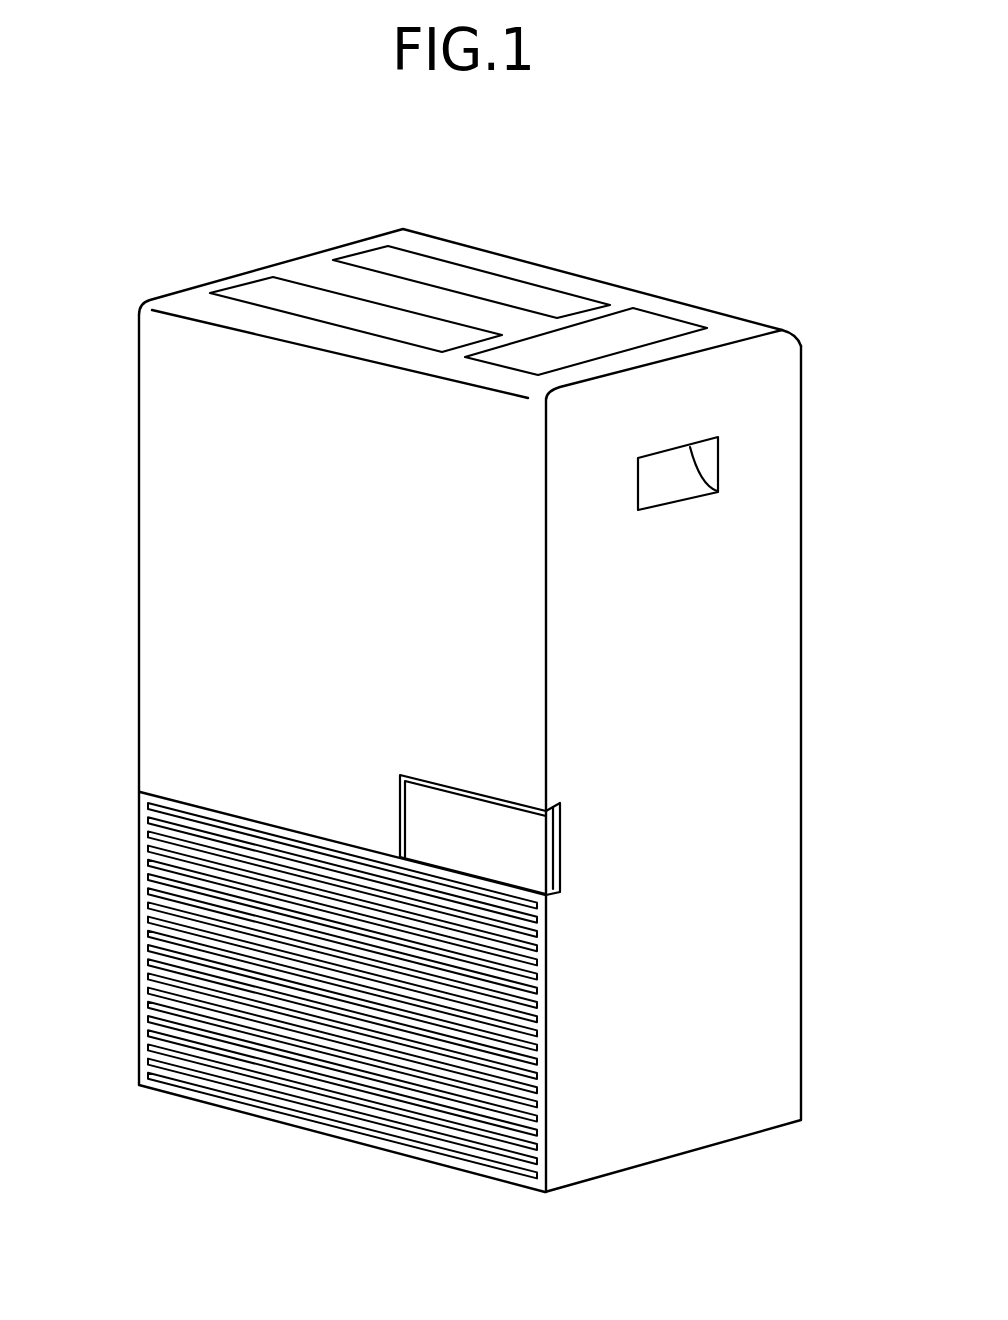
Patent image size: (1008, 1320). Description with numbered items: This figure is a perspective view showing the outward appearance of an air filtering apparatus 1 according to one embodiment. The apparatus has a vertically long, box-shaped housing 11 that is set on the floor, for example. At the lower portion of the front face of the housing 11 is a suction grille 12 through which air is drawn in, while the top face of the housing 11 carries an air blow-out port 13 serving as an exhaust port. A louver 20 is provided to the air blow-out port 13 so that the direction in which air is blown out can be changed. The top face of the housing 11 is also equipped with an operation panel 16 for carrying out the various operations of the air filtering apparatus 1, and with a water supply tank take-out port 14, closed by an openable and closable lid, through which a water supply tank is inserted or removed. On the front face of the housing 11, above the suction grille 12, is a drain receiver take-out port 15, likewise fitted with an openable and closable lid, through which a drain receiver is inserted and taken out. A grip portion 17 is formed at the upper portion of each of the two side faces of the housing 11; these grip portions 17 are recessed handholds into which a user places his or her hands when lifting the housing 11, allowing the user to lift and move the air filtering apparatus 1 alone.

The air filtering apparatus 1 is at (840, 222).
The housing 11 is at (800, 358).
The suction grille 12 is at (146, 924).
The air blow-out port 13 is at (303, 283).
The water supply tank take-out port 14 is at (642, 332).
The drain receiver take-out port 15 is at (420, 802).
The operation panel 16 is at (463, 275).
The grip portion 17 is at (711, 462).
The louver 20 is at (268, 297).